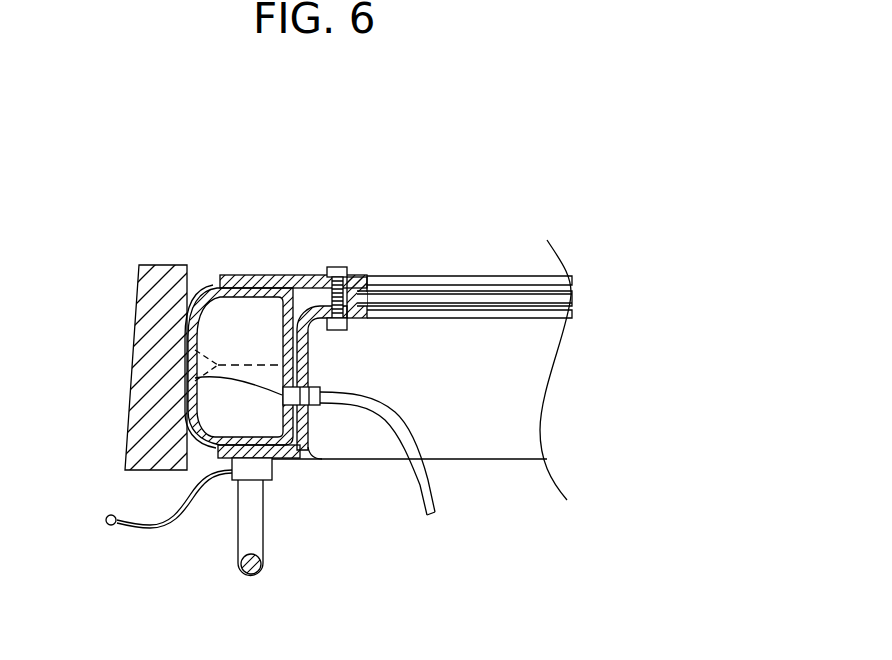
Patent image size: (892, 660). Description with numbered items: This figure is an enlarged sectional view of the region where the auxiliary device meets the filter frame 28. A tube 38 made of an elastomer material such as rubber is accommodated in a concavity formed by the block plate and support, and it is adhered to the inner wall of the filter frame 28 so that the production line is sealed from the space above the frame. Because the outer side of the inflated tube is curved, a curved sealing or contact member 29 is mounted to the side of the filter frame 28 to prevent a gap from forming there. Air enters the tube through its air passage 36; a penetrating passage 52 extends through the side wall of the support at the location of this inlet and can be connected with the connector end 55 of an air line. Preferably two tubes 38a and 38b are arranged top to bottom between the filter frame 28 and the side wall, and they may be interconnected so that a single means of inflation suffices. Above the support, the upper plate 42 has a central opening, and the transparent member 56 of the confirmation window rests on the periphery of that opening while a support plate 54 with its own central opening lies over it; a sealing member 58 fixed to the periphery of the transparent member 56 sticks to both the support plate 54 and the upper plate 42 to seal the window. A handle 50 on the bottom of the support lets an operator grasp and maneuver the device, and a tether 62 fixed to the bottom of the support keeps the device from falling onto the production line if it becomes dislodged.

The filter frame 28 is at (163, 288).
The curved sealing or contact member 29 is at (200, 290).
The air passage 36 is at (190, 368).
The tube 38 is at (187, 337).
The upper tube 38a is at (238, 311).
The lower tube 38b is at (222, 415).
The upper plate 42 is at (558, 313).
The handle 50 is at (265, 545).
The penetrating passage 52 is at (303, 385).
The support plate 54 is at (557, 284).
The connector end 55 is at (336, 412).
The transparent member 56 is at (557, 297).
The sealing member 58 is at (352, 268).
The tether 62 is at (160, 525).